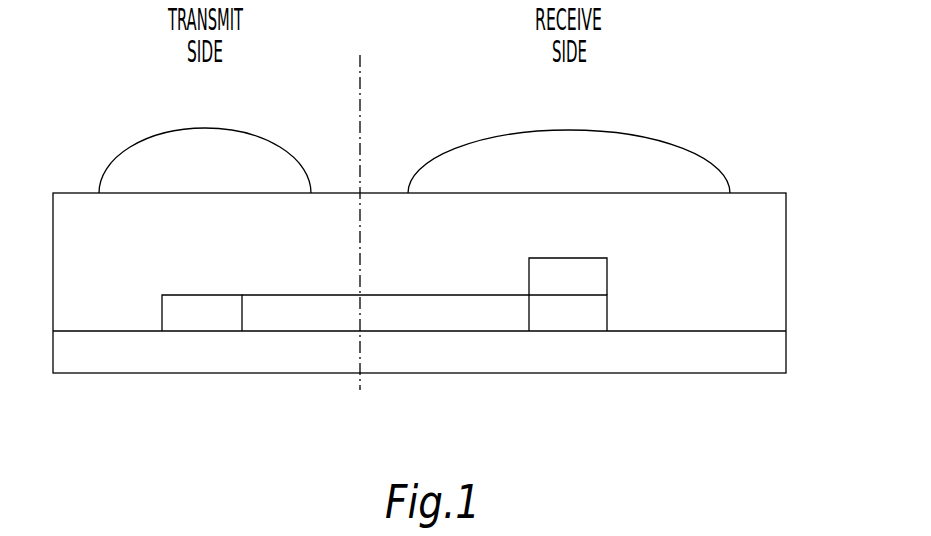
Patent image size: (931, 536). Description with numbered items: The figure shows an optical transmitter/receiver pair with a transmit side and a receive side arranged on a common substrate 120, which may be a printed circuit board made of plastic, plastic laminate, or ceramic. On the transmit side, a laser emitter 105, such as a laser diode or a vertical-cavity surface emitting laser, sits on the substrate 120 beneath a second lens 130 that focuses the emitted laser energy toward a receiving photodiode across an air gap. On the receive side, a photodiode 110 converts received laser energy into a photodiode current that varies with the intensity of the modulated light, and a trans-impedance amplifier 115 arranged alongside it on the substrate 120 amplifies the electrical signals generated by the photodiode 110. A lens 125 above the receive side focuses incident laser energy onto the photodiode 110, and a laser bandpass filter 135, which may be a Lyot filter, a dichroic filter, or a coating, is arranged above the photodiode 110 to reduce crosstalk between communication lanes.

The laser emitter 105 is at (191, 320).
The photodiode 110 is at (608, 313).
The trans-impedance amplifier 115 is at (305, 320).
The substrate 120 is at (418, 347).
The lens 125 is at (569, 134).
The second lens 130 is at (208, 133).
The laser bandpass filter 135 is at (608, 278).